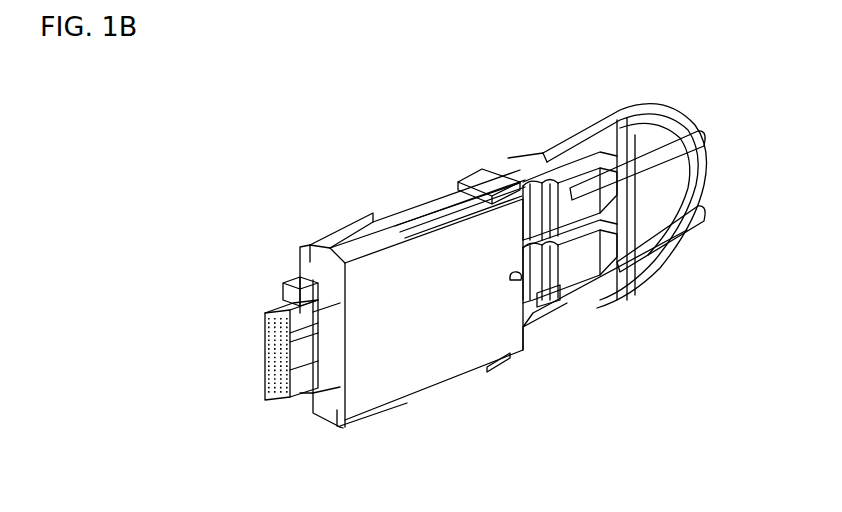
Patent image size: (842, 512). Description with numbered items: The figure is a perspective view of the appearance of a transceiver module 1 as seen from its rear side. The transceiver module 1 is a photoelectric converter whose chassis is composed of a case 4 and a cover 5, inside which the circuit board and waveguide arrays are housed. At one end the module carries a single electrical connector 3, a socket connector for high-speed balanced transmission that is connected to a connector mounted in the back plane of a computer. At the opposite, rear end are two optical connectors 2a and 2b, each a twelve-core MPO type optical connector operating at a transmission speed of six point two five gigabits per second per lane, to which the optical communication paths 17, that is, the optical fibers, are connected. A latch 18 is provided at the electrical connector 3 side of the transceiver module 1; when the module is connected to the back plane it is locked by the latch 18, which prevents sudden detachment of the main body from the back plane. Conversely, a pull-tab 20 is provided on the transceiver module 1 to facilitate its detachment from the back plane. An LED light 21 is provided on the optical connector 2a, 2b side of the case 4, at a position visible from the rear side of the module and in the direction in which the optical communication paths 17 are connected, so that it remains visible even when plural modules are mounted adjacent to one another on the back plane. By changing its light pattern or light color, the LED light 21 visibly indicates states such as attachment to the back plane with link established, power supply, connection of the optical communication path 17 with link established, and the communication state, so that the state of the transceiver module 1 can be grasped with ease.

The transceiver module 1 is at (745, 423).
The optical connector 2a is at (540, 207).
The optical connector 2b is at (540, 300).
The electrical connector 3 is at (265, 331).
The case 4 is at (422, 372).
The cover 5 is at (455, 187).
The optical communication path 17 is at (665, 162).
The latch 18 is at (300, 278).
The pull-tab 20 is at (630, 107).
The LED light 21 is at (515, 275).